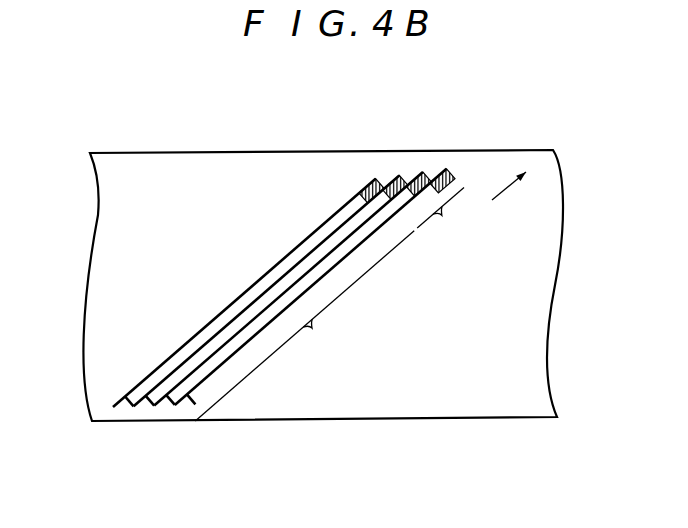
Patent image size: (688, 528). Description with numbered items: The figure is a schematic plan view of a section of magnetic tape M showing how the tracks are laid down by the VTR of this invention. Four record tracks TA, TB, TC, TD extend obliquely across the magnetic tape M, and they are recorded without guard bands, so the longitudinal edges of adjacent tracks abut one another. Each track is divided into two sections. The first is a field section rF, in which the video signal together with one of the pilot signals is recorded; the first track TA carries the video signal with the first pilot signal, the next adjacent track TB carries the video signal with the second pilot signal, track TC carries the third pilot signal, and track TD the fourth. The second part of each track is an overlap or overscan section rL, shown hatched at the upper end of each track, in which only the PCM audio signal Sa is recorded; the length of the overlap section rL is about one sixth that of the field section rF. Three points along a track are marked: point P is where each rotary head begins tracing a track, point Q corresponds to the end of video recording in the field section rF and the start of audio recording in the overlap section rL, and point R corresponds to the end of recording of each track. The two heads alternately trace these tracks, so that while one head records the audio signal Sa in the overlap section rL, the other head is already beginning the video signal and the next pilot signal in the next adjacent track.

The magnetic tape M is at (191, 153).
The PCM audio signal Sa is at (367, 186).
The first record track TA is at (118, 408).
The second record track TB is at (136, 408).
The third record track TC is at (156, 407).
The fourth record track TD is at (176, 406).
The overlap section rL is at (442, 211).
The field section rF is at (304, 326).
The point R is at (478, 200).
The point Q is at (430, 233).
The point P is at (210, 425).